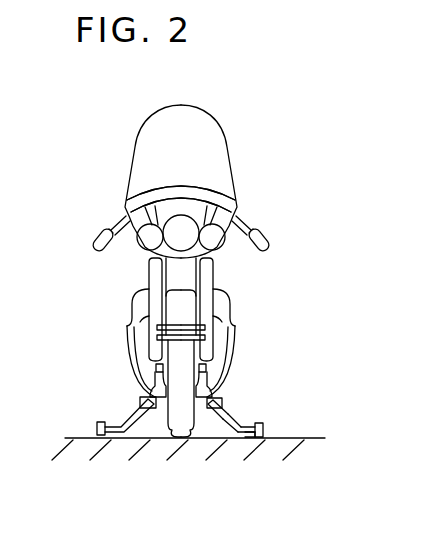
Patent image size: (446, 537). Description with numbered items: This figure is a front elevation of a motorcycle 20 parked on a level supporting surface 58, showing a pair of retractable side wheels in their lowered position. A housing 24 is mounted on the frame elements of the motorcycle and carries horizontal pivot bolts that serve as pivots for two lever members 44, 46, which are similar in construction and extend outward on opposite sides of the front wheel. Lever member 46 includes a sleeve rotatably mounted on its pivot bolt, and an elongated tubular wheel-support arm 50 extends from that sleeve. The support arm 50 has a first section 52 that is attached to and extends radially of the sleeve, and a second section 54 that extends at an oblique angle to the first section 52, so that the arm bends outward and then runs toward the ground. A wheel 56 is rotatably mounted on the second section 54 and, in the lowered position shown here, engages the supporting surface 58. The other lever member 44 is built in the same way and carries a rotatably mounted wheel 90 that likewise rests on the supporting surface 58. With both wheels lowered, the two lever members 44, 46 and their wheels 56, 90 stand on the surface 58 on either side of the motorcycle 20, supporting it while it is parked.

The motorcycle 20 is at (308, 188).
The housing 24 is at (220, 404).
The lever member 44 is at (135, 405).
The lever member 46 is at (241, 416).
The wheel-support arm 50 is at (231, 434).
The first section 52 is at (218, 410).
The second section 54 is at (250, 436).
The wheel 56 is at (262, 423).
The supporting surface 58 is at (77, 438).
The wheel 90 is at (98, 422).